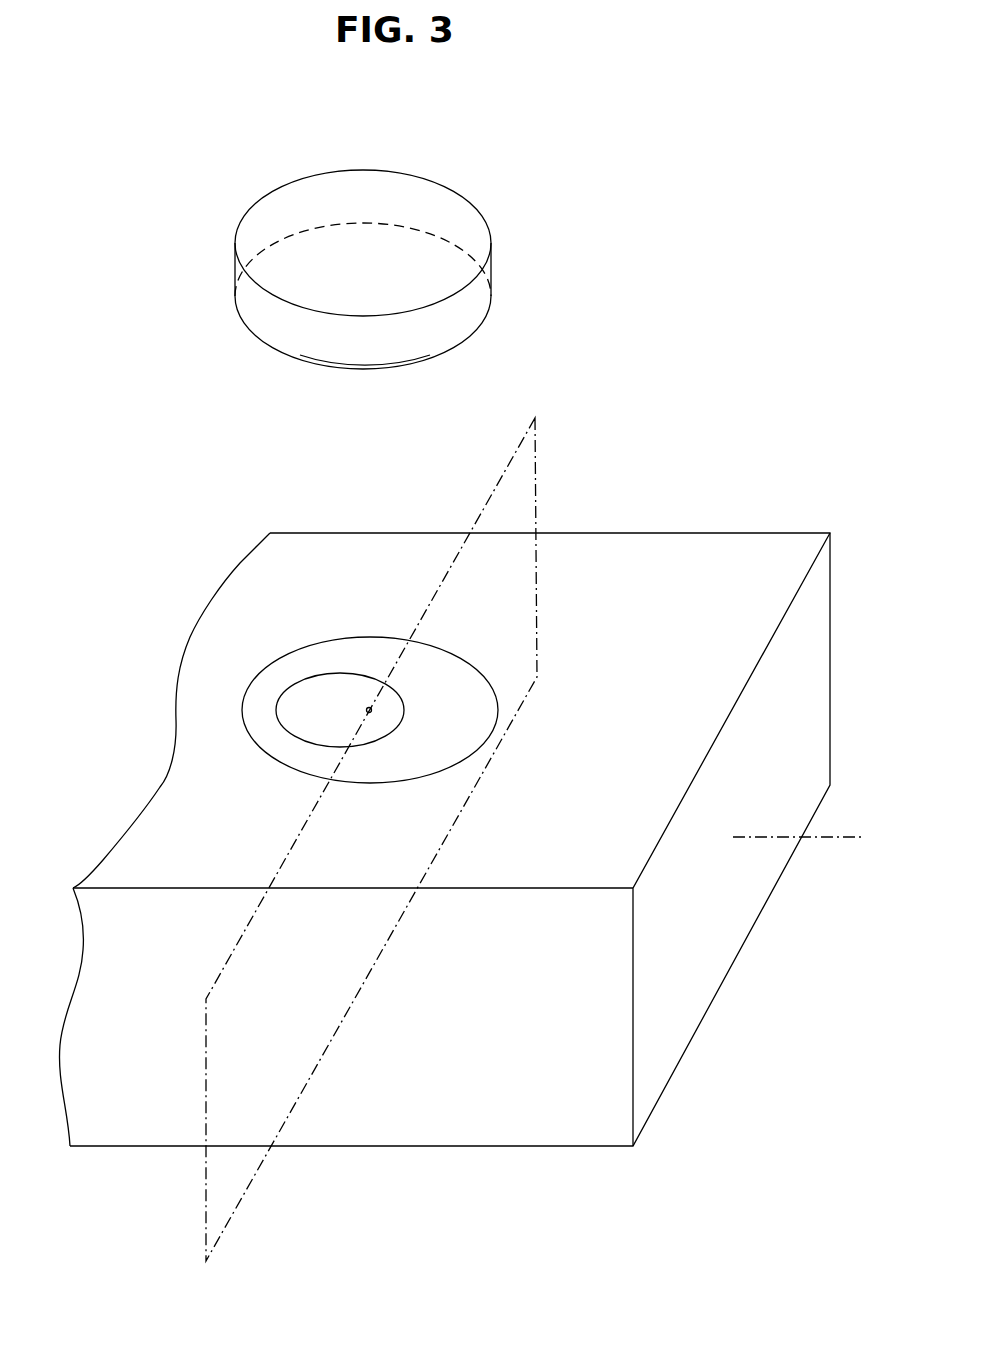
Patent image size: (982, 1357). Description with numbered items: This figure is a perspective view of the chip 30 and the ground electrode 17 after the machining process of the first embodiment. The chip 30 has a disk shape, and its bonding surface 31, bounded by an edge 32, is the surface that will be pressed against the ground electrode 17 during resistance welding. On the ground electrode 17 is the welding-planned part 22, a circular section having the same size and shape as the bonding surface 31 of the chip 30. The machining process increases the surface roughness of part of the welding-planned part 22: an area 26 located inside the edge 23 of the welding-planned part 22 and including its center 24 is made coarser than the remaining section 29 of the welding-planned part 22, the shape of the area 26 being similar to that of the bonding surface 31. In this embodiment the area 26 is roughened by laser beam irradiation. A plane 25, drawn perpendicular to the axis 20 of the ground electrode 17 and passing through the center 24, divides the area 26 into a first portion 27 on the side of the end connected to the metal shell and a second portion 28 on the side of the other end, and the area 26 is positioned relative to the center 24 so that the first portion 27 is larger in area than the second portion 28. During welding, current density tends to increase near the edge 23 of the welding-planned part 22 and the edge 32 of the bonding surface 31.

The ground electrode 17 is at (462, 832).
The axis 20 is at (850, 844).
The welding-planned part 22 is at (247, 785).
The edge 23 is at (384, 730).
The center 24 is at (372, 712).
The plane 25 is at (537, 478).
The area 26 is at (384, 686).
The first portion 27 is at (334, 666).
The second portion 28 is at (392, 697).
The section 29 is at (384, 715).
The chip 30 is at (379, 297).
The bonding surface 31 is at (287, 337).
The edge 32 is at (347, 370).